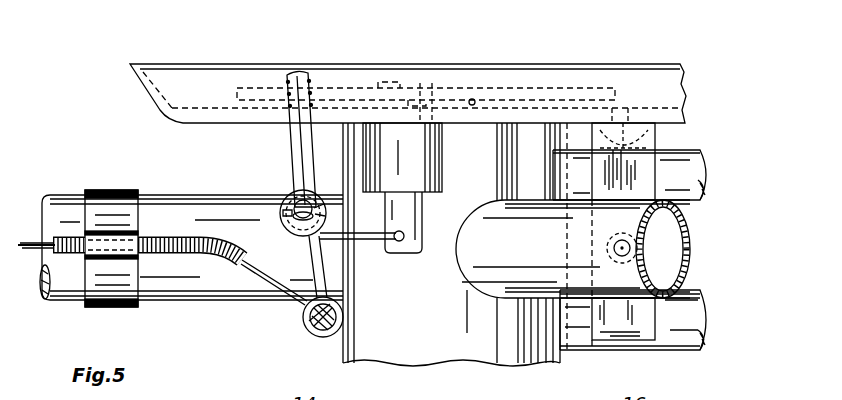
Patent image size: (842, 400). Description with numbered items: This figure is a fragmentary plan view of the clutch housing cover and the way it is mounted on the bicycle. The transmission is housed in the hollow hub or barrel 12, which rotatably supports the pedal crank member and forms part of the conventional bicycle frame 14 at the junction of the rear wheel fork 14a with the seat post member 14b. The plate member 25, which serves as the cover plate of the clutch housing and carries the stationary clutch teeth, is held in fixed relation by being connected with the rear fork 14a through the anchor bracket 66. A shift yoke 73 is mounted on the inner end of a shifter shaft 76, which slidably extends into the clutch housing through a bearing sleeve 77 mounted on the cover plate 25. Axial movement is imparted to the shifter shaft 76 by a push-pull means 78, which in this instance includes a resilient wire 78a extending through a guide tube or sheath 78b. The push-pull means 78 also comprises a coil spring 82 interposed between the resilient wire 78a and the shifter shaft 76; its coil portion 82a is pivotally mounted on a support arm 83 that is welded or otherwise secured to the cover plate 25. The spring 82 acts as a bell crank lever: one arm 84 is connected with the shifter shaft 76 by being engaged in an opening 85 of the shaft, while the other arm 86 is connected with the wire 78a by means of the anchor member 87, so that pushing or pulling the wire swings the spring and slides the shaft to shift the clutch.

The hub 12 is at (523, 357).
The bicycle frame 14 is at (210, 305).
The rear wheel fork 14a is at (690, 150).
The seat post member 14b is at (623, 300).
The plate member 25 is at (342, 80).
The anchor bracket 66 is at (648, 172).
The shift yoke 73 is at (547, 93).
The shifter shaft 76 is at (421, 205).
The bearing sleeve 77 is at (436, 160).
The push-pull means 78 is at (167, 262).
The resilient wire 78a is at (277, 278).
The guide tube or sheath 78b is at (72, 267).
The coil spring 82 is at (291, 201).
The coil portion 82a is at (285, 211).
The support arm 83 is at (292, 148).
The arm 84 is at (372, 262).
The opening 85 is at (401, 233).
The other arm 86 is at (330, 273).
The anchor member 87 is at (312, 330).